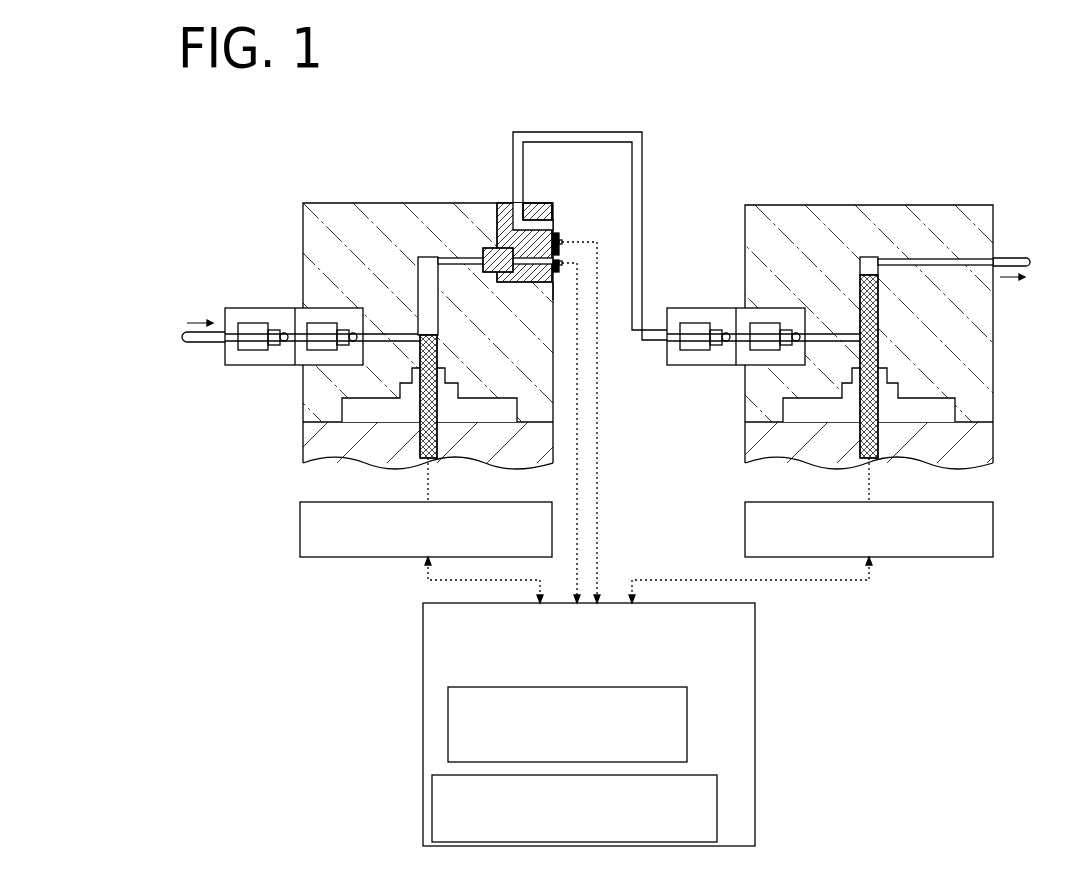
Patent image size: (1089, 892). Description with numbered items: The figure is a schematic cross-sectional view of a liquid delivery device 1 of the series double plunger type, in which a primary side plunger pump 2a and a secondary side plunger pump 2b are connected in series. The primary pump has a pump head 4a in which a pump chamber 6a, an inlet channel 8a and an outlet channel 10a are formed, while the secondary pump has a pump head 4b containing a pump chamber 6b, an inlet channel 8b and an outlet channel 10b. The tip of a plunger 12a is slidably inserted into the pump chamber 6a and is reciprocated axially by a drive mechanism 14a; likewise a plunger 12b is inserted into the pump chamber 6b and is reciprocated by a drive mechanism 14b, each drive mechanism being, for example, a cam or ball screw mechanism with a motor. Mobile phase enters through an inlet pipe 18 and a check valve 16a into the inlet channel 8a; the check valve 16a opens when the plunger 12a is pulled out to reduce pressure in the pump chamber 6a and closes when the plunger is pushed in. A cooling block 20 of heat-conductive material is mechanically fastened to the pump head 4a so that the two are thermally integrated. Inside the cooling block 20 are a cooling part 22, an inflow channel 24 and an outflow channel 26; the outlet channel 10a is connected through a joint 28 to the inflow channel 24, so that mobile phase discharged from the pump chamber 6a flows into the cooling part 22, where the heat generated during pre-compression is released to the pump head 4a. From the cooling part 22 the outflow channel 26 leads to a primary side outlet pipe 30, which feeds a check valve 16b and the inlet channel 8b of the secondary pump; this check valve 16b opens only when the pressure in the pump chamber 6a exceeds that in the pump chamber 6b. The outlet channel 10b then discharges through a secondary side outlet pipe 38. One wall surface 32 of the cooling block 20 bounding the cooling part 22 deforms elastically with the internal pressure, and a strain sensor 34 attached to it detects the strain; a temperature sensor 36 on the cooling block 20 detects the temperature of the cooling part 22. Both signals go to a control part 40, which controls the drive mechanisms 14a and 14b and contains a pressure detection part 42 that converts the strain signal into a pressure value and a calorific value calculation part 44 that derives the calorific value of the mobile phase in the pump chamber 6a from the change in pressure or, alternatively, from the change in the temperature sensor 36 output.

The liquid delivery device 1 is at (717, 87).
The primary side plunger pump 2a is at (325, 165).
The secondary side plunger pump 2b is at (765, 165).
The pump head 4a is at (303, 219).
The pump head 4b is at (744, 243).
The pump chamber 6a is at (427, 262).
The pump chamber 6b is at (869, 257).
The inlet channel 8a is at (392, 333).
The inlet channel 8b is at (832, 337).
The outlet channel 10a is at (462, 257).
The outlet channel 10b is at (934, 258).
The plunger 12a is at (340, 412).
The plunger 12b is at (783, 412).
The drive mechanism 14a is at (300, 520).
The drive mechanism 14b is at (993, 520).
The check valve 16a is at (258, 307).
The check valve 16b is at (702, 307).
The inlet pipe 18 is at (205, 342).
The cooling block 20 is at (507, 203).
The cooling part 22 is at (556, 233).
The inflow channel 24 is at (548, 292).
The outflow channel 26 is at (536, 203).
The joint 28 is at (492, 250).
The primary side outlet pipe 30 is at (566, 131).
The wall surface 32 is at (559, 238).
The strain sensor 34 is at (560, 240).
The temperature sensor 36 is at (559, 262).
The secondary side outlet pipe 38 is at (1013, 257).
The control part 40 is at (758, 617).
The pressure detection part 42 is at (688, 735).
The calorific value calculation part 44 is at (716, 800).